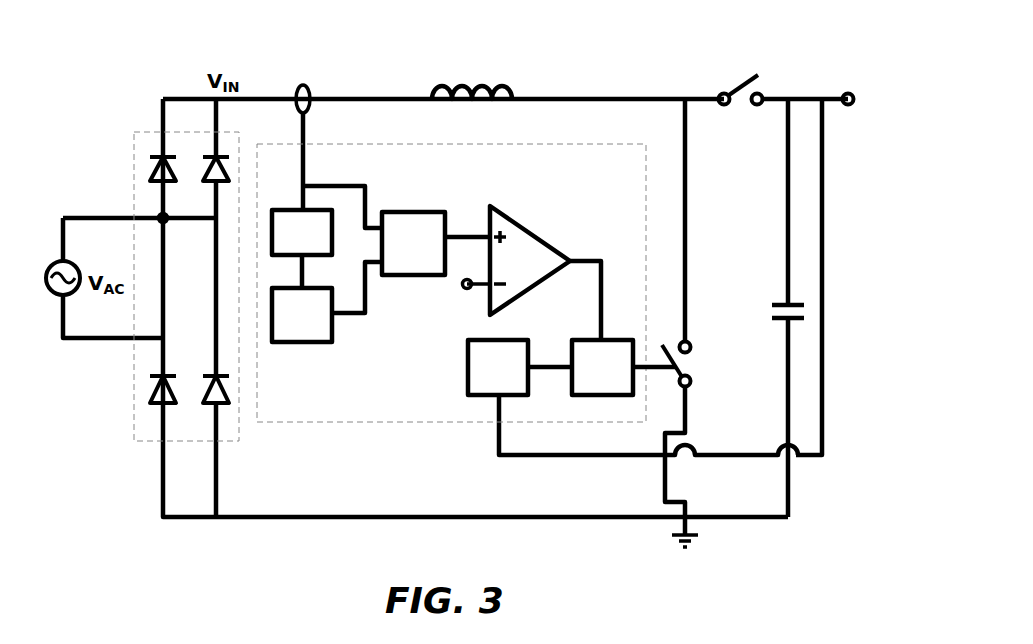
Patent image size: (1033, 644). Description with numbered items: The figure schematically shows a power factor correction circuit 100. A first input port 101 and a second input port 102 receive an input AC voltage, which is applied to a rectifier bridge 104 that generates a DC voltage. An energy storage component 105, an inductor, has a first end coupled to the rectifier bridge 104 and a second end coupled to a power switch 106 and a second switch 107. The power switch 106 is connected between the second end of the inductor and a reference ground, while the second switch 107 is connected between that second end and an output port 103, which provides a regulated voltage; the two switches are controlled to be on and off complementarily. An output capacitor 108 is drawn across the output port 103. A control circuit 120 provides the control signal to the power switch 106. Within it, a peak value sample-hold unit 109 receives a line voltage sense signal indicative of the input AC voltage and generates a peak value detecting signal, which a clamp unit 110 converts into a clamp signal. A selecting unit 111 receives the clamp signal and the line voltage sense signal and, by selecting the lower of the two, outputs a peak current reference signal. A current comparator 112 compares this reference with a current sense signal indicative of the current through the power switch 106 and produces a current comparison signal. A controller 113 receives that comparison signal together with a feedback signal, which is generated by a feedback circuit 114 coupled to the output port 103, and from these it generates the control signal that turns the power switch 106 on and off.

The power factor correction circuit 100 is at (101, 96).
The first input port 101 is at (132, 227).
The second input port 102 is at (105, 334).
The output port 103 is at (828, 262).
The rectifier bridge 104 is at (147, 445).
The energy storage component 105 is at (472, 77).
The power switch 106 is at (702, 439).
The second switch 107 is at (784, 108).
The output capacitor 108 is at (767, 308).
The peak value sample-hold unit 109 is at (327, 220).
The clamp unit 110 is at (327, 298).
The selecting unit 111 is at (436, 243).
The current comparator 112 is at (532, 273).
The controller 113 is at (624, 367).
The feedback circuit 114 is at (520, 367).
The control circuit 120 is at (466, 283).